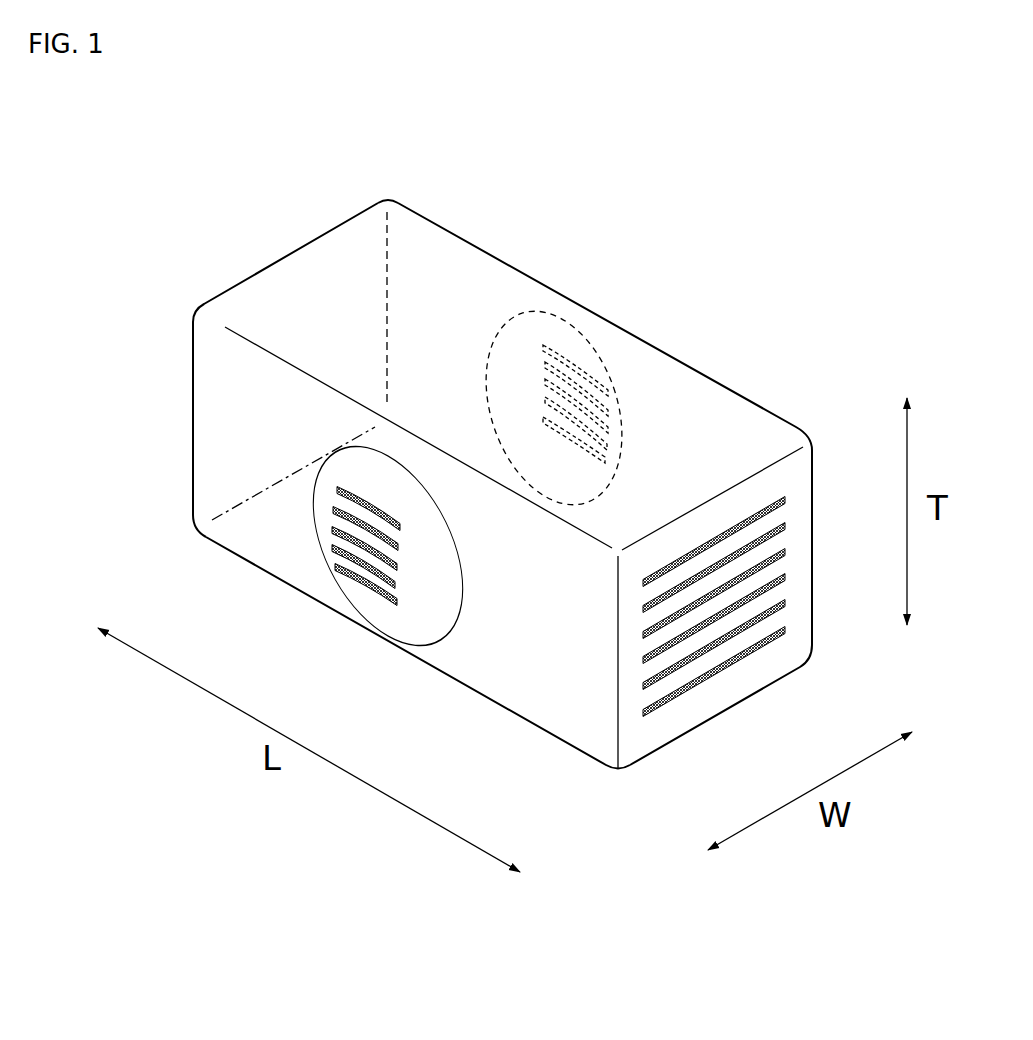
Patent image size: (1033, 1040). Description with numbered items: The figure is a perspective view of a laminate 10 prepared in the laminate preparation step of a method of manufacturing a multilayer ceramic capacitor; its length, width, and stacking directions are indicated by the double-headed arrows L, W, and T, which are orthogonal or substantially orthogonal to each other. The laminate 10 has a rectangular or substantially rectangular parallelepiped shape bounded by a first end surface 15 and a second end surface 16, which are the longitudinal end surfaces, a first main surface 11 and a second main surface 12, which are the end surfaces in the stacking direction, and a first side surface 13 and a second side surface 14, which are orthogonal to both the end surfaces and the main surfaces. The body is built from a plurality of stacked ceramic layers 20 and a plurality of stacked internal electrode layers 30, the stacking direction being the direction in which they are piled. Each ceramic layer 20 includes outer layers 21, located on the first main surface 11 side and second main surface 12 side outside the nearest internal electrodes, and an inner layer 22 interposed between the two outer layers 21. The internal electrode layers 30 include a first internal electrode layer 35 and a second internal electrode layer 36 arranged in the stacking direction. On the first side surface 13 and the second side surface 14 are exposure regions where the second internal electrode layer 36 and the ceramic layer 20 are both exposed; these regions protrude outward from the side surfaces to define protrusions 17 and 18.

The laminate 10 is at (809, 312).
The first main surface 11 is at (483, 252).
The second main surface 12 is at (513, 660).
The first side surface 13 is at (257, 532).
The second side surface 14 is at (638, 388).
The first end surface 15 is at (218, 367).
The second end surface 16 is at (800, 525).
The protrusion 17 is at (420, 618).
The protrusion 18 is at (538, 315).
The ceramic layer 20 is at (468, 569).
The outer layer 21 is at (753, 490).
The inner layer 22 is at (350, 507).
The internal electrode layer 30 is at (468, 569).
The first internal electrode layer 35 is at (738, 660).
The second internal electrode layer 36 is at (353, 580).